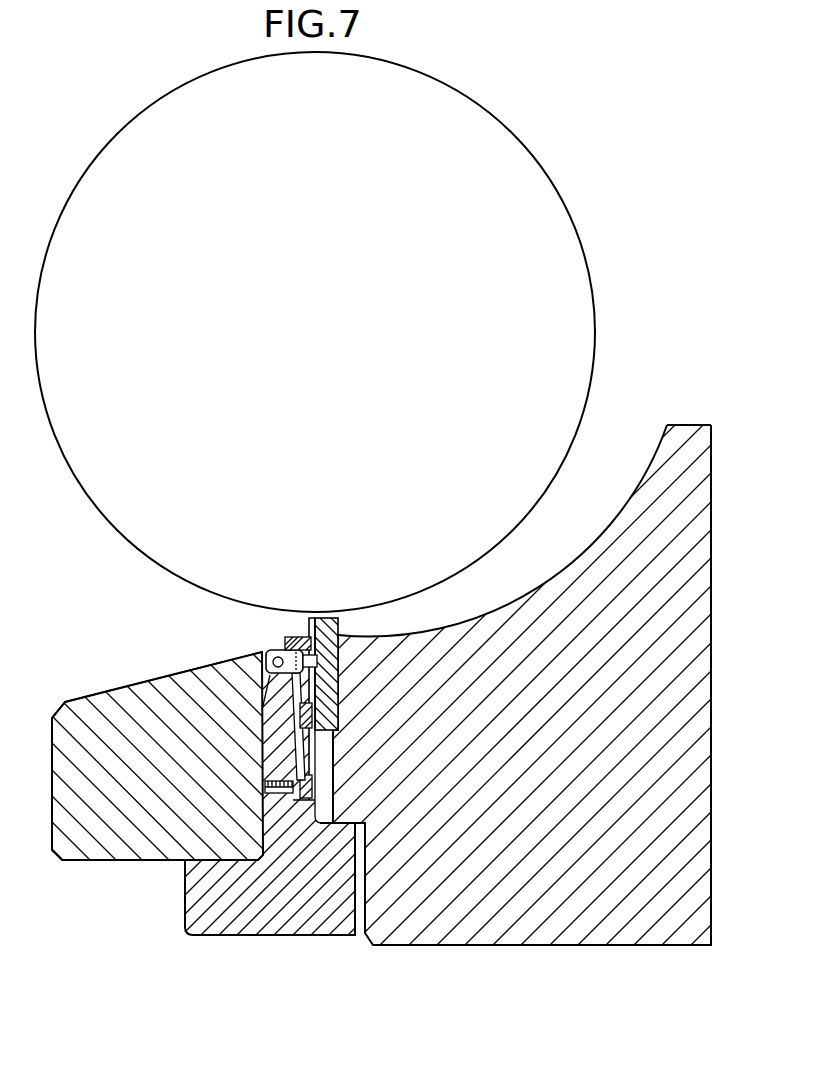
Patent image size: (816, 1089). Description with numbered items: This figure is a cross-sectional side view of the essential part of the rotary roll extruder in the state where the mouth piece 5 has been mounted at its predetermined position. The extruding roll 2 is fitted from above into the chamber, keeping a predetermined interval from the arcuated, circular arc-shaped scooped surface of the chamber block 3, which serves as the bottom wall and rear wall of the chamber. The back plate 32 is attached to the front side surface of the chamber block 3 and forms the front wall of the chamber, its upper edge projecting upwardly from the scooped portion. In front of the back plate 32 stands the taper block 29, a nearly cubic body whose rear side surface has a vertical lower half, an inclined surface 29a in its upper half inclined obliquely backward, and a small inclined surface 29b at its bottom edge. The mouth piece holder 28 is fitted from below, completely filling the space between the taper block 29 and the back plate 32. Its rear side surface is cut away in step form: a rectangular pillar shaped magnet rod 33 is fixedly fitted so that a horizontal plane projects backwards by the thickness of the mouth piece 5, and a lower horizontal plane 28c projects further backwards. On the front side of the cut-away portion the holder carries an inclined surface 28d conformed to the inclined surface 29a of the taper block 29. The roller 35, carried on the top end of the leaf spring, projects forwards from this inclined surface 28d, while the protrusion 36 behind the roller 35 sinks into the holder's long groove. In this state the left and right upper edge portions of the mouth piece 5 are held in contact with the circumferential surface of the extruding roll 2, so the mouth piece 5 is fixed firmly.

The extruding roll 2 is at (520, 142).
The chamber block 3 is at (711, 426).
The mouth piece 5 is at (308, 623).
The mouth piece holder 28 is at (243, 927).
The horizontal plane 28c is at (325, 820).
The inclined surface 28d is at (333, 760).
The taper block 29 is at (82, 708).
The inclined surface 29a is at (262, 693).
The small inclined surface 29b is at (266, 856).
The back plate 32 is at (340, 625).
The magnet rod 33 is at (332, 732).
The roller 35 is at (287, 643).
The protrusion 36 is at (420, 633).